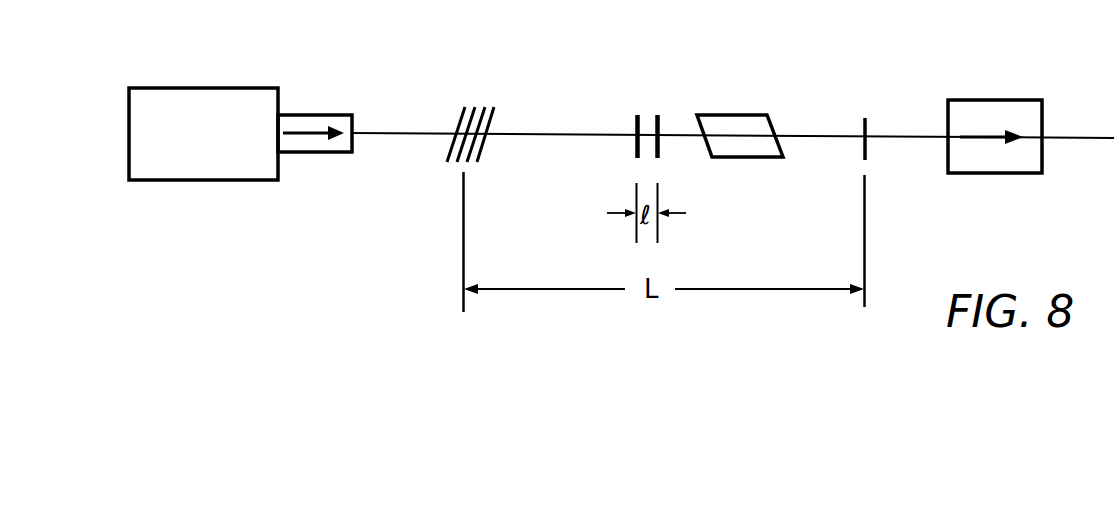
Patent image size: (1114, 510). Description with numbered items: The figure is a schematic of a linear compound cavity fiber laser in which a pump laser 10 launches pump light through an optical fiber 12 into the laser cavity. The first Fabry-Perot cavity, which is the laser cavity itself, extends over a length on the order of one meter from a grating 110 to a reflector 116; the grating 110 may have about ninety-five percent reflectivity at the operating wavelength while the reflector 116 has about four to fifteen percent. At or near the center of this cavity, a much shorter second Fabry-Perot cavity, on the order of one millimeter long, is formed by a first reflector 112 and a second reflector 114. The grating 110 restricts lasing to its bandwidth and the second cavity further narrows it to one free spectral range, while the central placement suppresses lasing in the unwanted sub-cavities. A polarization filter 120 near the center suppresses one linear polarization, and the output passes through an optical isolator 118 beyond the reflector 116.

The pump laser 10 is at (212, 88).
The optical fiber 12 is at (407, 134).
The grating 110 is at (494, 107).
The first reflector 112 is at (637, 115).
The second reflector 114 is at (660, 118).
The reflector 116 is at (868, 120).
The optical isolator 118 is at (1042, 100).
The polarization filter 120 is at (747, 115).